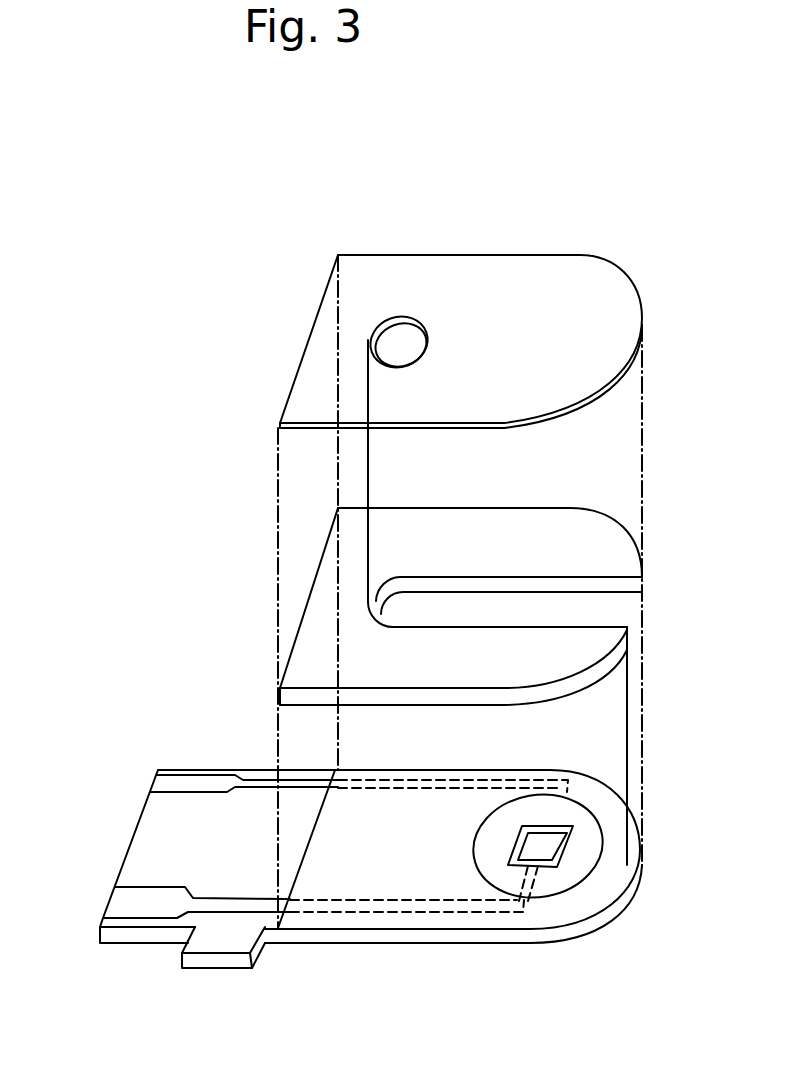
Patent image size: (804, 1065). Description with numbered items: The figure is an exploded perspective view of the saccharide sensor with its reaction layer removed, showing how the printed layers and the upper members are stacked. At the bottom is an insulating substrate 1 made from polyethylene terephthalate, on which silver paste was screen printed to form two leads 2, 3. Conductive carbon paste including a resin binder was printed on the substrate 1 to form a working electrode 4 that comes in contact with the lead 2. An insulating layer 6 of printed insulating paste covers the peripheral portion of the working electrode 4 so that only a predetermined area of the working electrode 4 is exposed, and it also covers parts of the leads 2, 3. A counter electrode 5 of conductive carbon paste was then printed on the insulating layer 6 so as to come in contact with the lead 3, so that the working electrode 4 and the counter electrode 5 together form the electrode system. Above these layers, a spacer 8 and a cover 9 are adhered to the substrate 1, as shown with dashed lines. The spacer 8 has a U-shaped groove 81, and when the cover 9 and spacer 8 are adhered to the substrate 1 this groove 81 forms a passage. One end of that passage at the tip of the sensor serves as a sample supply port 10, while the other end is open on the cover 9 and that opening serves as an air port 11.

The insulating substrate 1 is at (210, 848).
The lead 2 is at (122, 902).
The lead 3 is at (165, 783).
The working electrode 4 is at (547, 847).
The counter electrode 5 is at (552, 810).
The insulating layer 6 is at (407, 878).
The spacer 8 is at (327, 610).
The U-shaped groove 81 is at (537, 608).
The cover 9 is at (325, 345).
The sample supply port 10 is at (628, 620).
The air port 11 is at (392, 335).